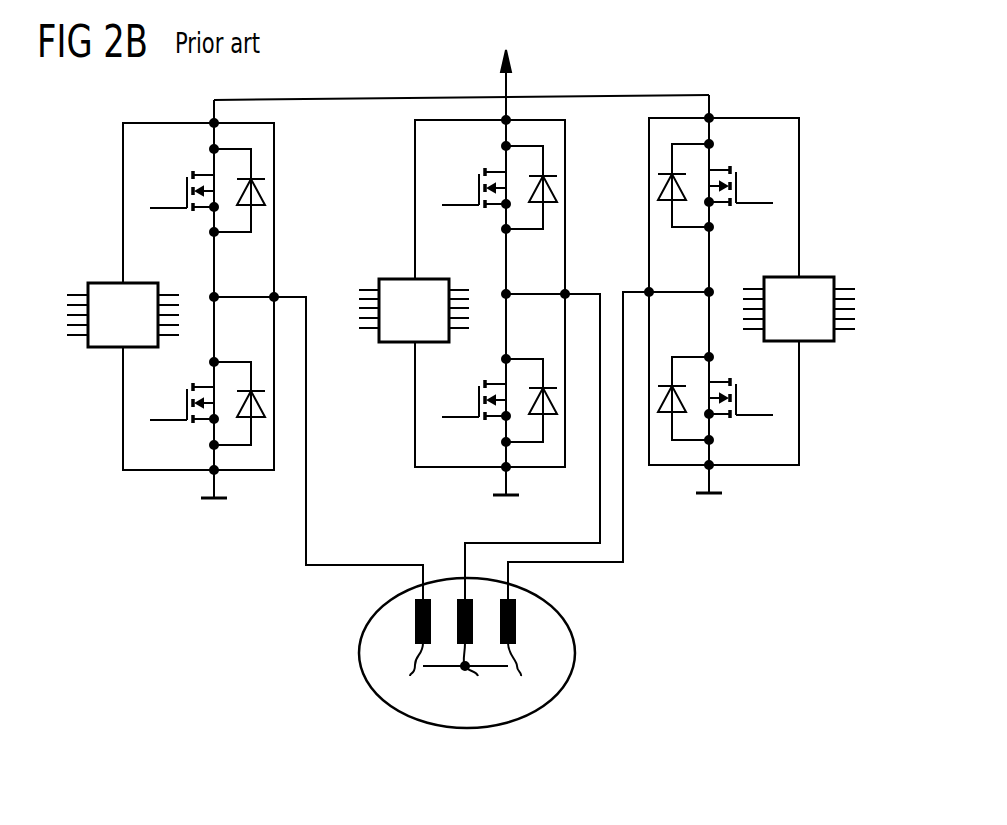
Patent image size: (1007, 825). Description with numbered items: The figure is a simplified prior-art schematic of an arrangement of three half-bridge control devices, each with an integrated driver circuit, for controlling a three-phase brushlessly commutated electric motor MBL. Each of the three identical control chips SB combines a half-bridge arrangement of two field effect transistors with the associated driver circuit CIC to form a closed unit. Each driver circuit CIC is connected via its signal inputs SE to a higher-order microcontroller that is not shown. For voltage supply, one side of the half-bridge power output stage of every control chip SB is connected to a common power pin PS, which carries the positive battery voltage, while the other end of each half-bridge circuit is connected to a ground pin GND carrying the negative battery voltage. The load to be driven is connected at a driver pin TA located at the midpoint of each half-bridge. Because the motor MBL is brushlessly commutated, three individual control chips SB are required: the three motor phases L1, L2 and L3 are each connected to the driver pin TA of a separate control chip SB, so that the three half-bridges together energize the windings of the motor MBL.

The power pin PS is at (461, 72).
The control chip SB is at (172, 471).
The driver circuit CIC is at (461, 312).
The signal inputs SE is at (461, 312).
The driver pin TA is at (276, 296).
The ground pin GND is at (506, 501).
The brushlessly commutated electric motor MBL is at (575, 650).
The first phase L1 is at (432, 656).
The second phase L2 is at (475, 656).
The third phase L3 is at (500, 656).